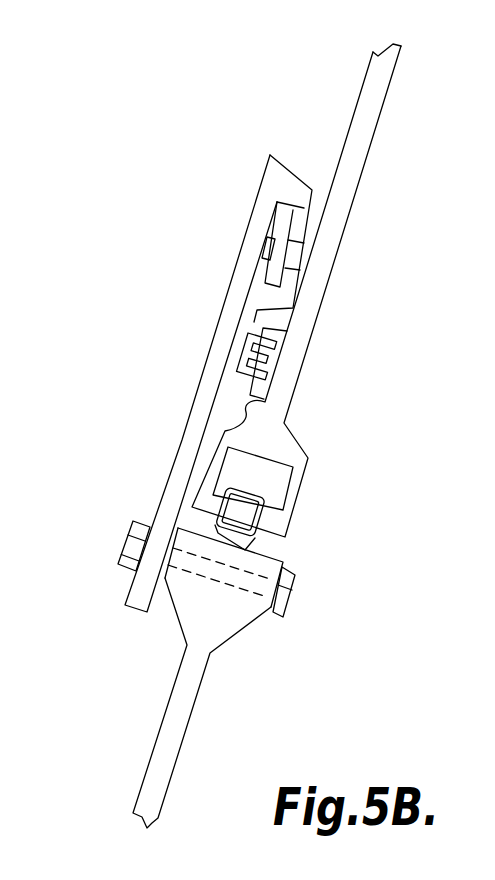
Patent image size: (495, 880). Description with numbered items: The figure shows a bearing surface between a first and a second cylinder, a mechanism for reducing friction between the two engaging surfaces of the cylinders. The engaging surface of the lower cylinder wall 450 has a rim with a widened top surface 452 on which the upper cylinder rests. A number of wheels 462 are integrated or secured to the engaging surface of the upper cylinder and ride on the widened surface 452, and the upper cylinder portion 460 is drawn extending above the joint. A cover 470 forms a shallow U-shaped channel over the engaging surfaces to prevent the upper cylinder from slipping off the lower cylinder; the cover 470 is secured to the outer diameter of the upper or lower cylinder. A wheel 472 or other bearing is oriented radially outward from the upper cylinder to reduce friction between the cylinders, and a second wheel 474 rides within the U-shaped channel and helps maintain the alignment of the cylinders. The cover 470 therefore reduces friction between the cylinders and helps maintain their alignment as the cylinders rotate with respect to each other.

The lower cylinder wall 450 is at (163, 730).
The widened top surface 452 is at (281, 561).
The bar member 460 is at (364, 167).
The wheels 462 is at (245, 502).
The cover 470 is at (208, 350).
The wheel 472 is at (240, 333).
The second wheel 474 is at (287, 223).